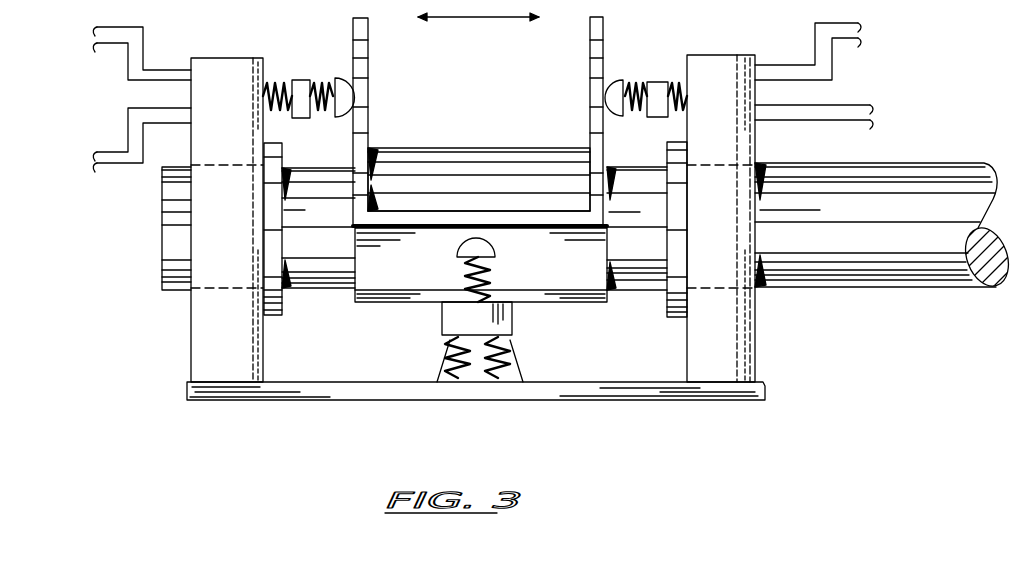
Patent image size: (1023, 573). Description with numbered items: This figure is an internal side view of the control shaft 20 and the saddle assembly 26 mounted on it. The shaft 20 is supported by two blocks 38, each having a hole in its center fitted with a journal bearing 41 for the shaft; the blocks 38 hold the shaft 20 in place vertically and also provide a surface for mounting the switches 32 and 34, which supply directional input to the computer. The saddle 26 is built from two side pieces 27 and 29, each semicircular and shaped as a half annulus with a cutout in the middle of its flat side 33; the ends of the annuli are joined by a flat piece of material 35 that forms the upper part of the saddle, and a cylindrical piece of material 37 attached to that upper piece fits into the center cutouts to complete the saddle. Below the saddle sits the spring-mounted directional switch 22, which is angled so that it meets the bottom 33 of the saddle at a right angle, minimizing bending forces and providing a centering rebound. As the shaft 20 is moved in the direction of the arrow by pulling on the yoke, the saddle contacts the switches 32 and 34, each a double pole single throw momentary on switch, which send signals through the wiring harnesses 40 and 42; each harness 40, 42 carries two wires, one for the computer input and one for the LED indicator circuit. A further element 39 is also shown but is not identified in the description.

The control shaft 20 is at (162, 232).
The directional switch 22 is at (513, 320).
The saddle assembly 26 is at (370, 47).
The side piece 27 is at (605, 28).
The side piece 29 is at (368, 122).
The switch 32 is at (300, 80).
The flat side (bottom of saddle) 33 is at (550, 233).
The switch 34 is at (663, 80).
The flat piece of material 35 is at (418, 226).
The cylindrical piece of material 37 is at (463, 165).
The block 38 is at (202, 332).
The base plate 39 is at (623, 397).
The wiring harness 40 is at (131, 99).
The journal bearing 41 is at (282, 152).
The wiring harness 42 is at (827, 76).